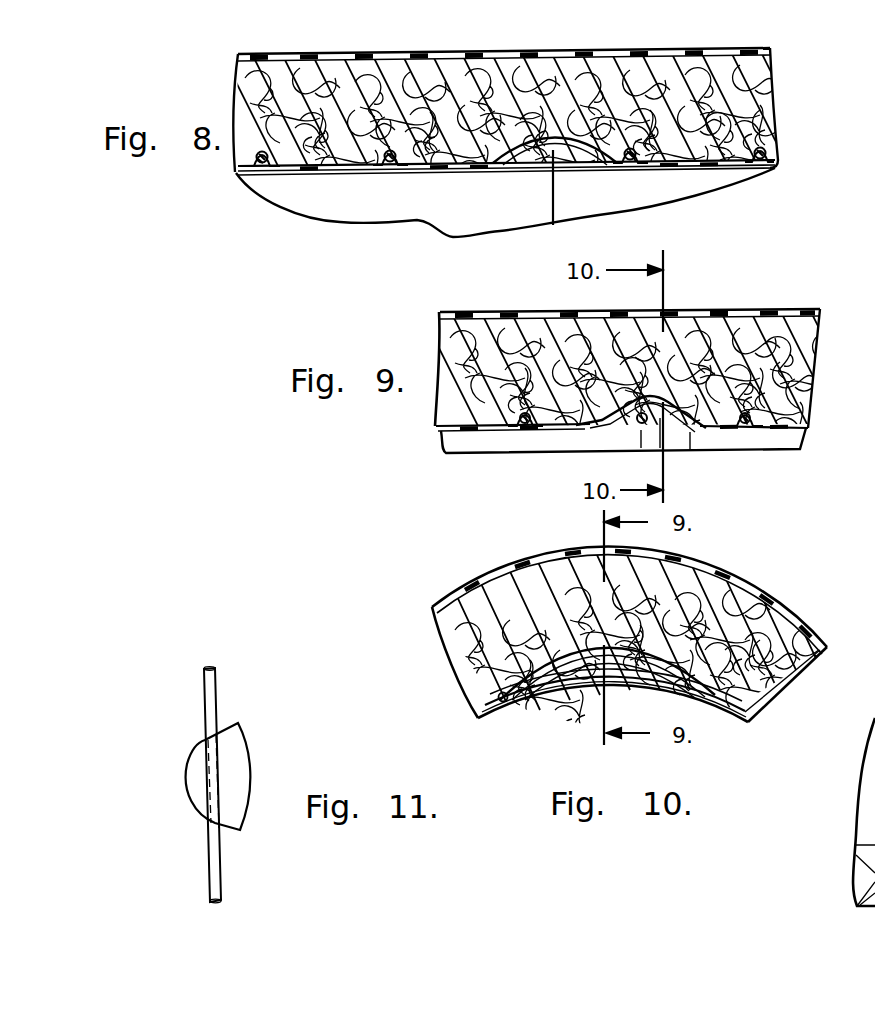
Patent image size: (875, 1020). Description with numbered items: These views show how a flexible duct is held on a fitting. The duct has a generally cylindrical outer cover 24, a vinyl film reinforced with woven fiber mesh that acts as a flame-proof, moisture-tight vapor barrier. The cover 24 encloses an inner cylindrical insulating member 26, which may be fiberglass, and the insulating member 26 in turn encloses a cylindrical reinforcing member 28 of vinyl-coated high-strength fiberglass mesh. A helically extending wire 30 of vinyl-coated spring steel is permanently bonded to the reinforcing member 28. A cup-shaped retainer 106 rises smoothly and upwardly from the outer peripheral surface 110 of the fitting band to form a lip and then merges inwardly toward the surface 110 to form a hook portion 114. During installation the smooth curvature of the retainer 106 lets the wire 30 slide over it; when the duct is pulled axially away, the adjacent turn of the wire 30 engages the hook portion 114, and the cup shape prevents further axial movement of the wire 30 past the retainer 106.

In FIG. 8, the outer cover 24 is at (733, 47).
In FIG. 9, the outer cover 24 is at (630, 314).
In FIG. 10, the outer cover 24 is at (805, 620).
In FIG. 8, the insulating member 26 is at (760, 92).
In FIG. 9, the insulating member 26 is at (640, 368).
In FIG. 10, the insulating member 26 is at (803, 670).
In FIG. 8, the reinforcing member 28 is at (768, 153).
In FIG. 9, the reinforcing member 28 is at (622, 427).
In FIG. 10, the reinforcing member 28 is at (758, 705).
In FIG. 8, the helically extending wire 30 is at (388, 170).
In FIG. 9, the helically extending wire 30 is at (635, 419).
In FIG. 10, the helically extending wire 30 is at (537, 694).
In FIG. 11, the helically extending wire 30 is at (217, 697).
In FIG. 8, the retainer 106 is at (594, 158).
In FIG. 9, the retainer 106 is at (682, 424).
In FIG. 10, the retainer 106 is at (667, 652).
In FIG. 11, the retainer 106 is at (233, 786).
In FIG. 8, the outer peripheral surface 110 is at (348, 208).
In FIG. 8, the hook portion 114 is at (556, 150).
In FIG. 9, the hook portion 114 is at (604, 422).